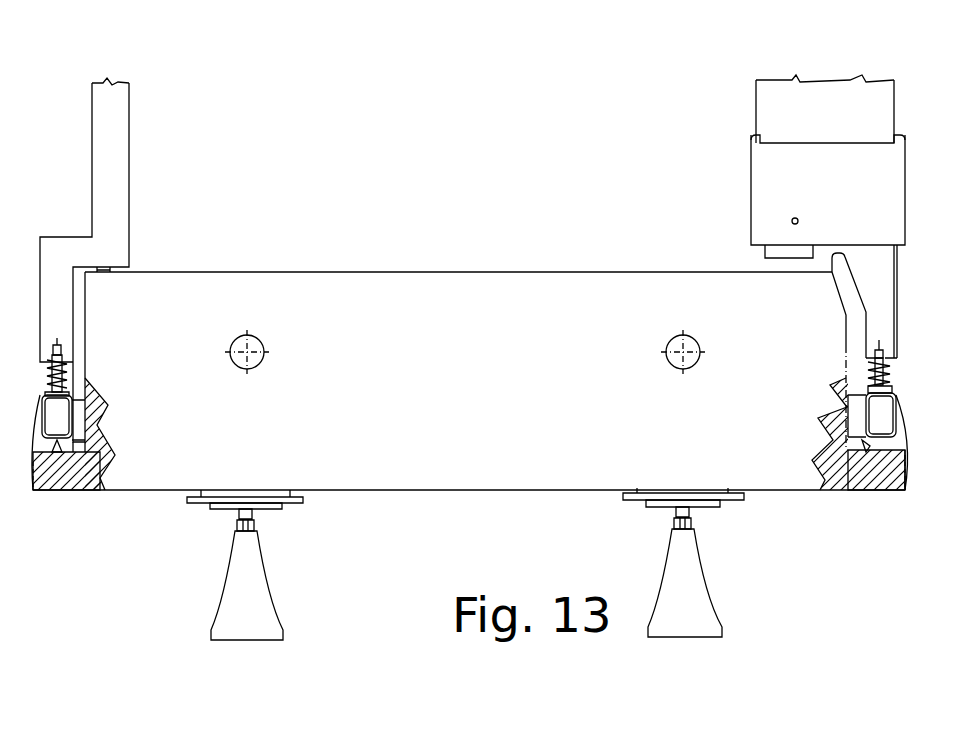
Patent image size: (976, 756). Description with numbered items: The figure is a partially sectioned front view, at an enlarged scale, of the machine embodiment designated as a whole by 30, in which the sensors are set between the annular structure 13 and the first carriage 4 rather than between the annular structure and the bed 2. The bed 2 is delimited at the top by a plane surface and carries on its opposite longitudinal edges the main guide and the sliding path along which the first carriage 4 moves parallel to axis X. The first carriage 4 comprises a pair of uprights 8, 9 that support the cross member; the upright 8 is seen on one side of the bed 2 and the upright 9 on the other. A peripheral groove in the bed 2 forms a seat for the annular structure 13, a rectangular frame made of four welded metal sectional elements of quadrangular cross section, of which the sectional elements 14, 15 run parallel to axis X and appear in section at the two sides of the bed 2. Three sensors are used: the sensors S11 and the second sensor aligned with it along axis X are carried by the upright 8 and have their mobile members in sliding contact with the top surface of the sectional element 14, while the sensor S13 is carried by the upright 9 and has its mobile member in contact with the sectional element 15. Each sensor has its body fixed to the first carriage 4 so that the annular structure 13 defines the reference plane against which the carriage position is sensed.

The bed 2 is at (424, 306).
The first carriage 4 is at (748, 80).
The upright 8 is at (785, 120).
The upright 9 is at (113, 188).
The annular structure 13 is at (865, 442).
The sectional element 14 is at (862, 412).
The sectional element 15 is at (72, 442).
The machine embodiment 30 is at (276, 150).
The sensor S11 is at (895, 456).
The sensor S13 is at (90, 442).